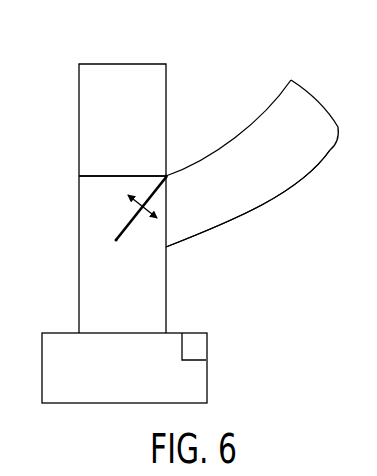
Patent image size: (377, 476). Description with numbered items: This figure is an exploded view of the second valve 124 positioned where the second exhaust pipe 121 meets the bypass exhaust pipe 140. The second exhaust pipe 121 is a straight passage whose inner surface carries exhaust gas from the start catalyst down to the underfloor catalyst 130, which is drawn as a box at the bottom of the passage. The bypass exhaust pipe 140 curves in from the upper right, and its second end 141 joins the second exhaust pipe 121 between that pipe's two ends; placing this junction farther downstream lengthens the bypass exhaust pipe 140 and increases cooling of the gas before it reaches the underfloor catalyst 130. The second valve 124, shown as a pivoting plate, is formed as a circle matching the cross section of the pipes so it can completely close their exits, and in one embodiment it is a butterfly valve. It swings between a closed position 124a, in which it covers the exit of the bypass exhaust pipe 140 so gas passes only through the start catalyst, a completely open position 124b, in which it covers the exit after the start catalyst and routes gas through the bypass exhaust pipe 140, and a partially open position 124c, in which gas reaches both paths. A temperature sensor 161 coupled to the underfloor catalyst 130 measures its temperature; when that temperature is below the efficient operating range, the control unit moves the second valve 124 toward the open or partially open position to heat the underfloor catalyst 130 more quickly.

The second exhaust pipe 121 is at (77, 265).
The second valve 124 is at (122, 233).
The closed position 124a is at (170, 210).
The completely open position 124b is at (122, 176).
The partially open position 124c is at (116, 241).
The underfloor catalyst 130 is at (207, 385).
The bypass exhaust pipe 140 is at (330, 152).
The second end of the bypass exhaust pipe 141 is at (200, 242).
The temperature sensor 161 is at (202, 347).